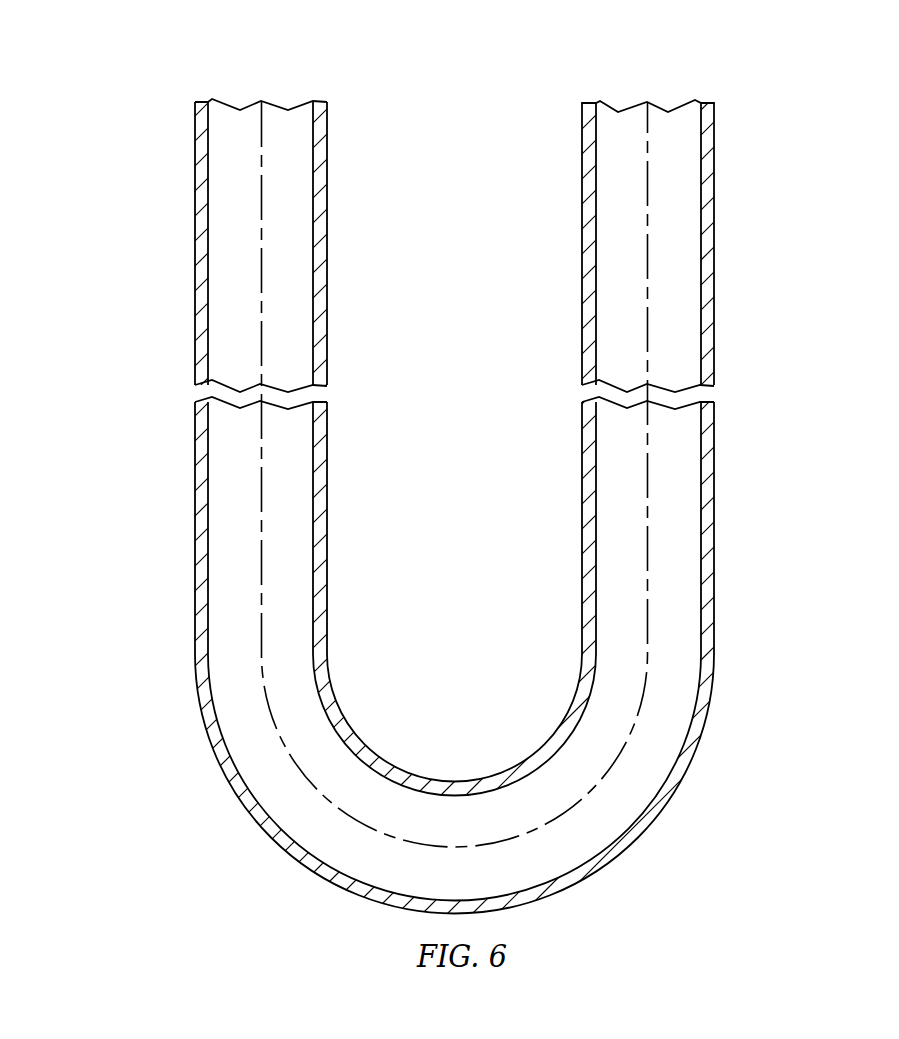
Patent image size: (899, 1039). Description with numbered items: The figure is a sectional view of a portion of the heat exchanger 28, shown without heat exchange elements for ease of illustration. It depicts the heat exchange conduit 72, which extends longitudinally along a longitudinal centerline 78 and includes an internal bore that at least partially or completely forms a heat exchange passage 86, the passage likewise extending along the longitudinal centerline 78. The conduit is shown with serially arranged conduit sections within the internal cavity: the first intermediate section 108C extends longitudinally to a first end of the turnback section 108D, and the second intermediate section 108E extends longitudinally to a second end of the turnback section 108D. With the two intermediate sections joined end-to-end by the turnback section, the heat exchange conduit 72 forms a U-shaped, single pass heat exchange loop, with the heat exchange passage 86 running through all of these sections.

The heat exchanger 28 is at (449, 488).
The heat exchange conduit 72 is at (449, 488).
The longitudinal centerline 78 is at (261, 128).
The heat exchange passage 86 is at (232, 137).
The first intermediate section 108C is at (195, 172).
The turnback section 108D is at (300, 856).
The second intermediate section 108E is at (714, 190).